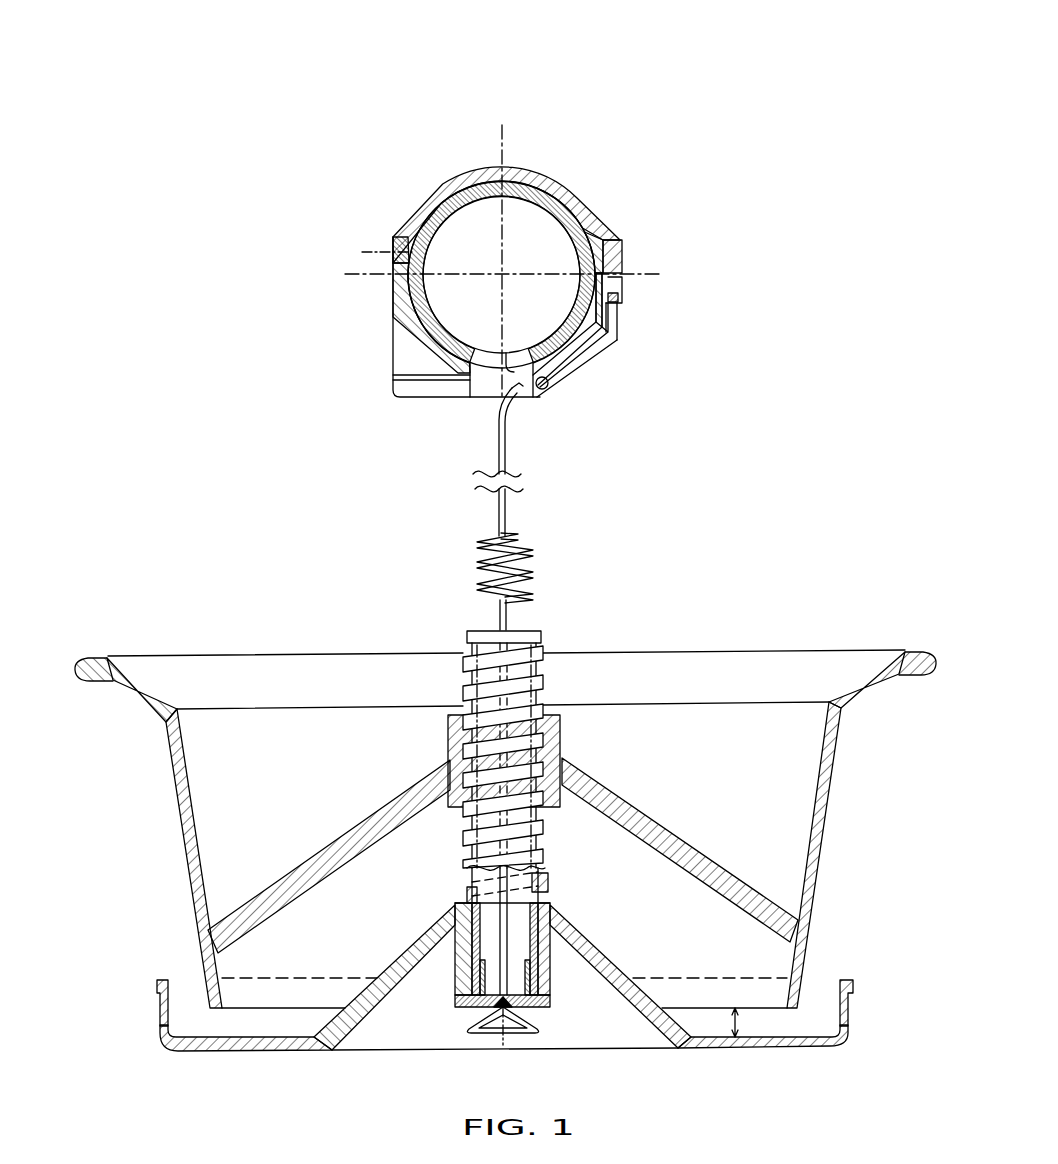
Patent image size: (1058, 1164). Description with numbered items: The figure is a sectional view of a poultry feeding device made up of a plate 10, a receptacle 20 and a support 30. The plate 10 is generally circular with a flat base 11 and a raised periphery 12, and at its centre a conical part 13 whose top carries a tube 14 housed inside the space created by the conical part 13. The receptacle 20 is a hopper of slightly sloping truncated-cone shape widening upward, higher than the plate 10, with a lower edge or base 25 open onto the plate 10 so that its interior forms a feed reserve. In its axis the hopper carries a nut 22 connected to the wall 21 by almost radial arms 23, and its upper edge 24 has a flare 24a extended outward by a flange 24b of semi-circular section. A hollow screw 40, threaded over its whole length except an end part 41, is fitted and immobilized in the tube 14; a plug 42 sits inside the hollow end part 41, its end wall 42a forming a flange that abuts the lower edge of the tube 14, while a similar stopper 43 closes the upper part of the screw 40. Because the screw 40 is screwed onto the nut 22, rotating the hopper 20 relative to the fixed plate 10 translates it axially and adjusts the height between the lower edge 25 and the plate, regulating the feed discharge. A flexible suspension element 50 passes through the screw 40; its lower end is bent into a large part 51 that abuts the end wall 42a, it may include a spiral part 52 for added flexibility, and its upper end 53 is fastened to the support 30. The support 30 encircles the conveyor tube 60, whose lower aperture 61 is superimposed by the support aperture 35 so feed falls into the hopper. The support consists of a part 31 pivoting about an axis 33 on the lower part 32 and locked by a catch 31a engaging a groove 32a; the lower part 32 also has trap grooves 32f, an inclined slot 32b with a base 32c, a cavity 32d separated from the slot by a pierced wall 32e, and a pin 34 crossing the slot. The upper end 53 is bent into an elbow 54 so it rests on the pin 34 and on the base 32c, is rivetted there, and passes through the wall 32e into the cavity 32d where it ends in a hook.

The plate 10 is at (821, 973).
The flat base 11 is at (258, 1051).
The periphery 12 is at (158, 1010).
The conical part 13 is at (598, 960).
The tube 14 is at (546, 975).
The receptacle (hopper) 20 is at (837, 806).
The wall 21 is at (822, 832).
The nut (screw) 22 is at (552, 735).
The arms 23 is at (330, 850).
The upper edge 24 is at (118, 651).
The flare 24a is at (135, 692).
The flange 24b is at (92, 658).
The base (lower edge) 25 is at (705, 1000).
The support 30 is at (589, 166).
The upper part of support 31 is at (545, 176).
The catch 31a is at (624, 254).
The lower part of support 32 is at (414, 340).
The groove 32a is at (597, 240).
The inclined slot 32b is at (612, 345).
The base of slot 32c is at (598, 331).
The cavity 32d is at (624, 292).
The wall 32e is at (620, 310).
The grooves 32f is at (412, 381).
The axis 33 is at (400, 243).
The pin 34 is at (549, 389).
The aperture 35 is at (483, 376).
The screw 40 is at (546, 850).
The end part 41 is at (460, 958).
The plug 42 is at (539, 1011).
The end wall 42a is at (466, 1007).
The stopper 43 is at (542, 638).
The suspension element 50 is at (508, 608).
The large part 51 is at (515, 1035).
The spiral part 52 is at (471, 577).
The upper end 53 is at (588, 366).
The elbow 54 is at (516, 385).
The conveyor tube 60 is at (426, 291).
The aperture 61 is at (521, 352).